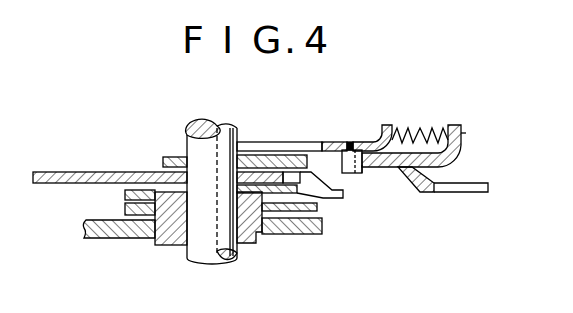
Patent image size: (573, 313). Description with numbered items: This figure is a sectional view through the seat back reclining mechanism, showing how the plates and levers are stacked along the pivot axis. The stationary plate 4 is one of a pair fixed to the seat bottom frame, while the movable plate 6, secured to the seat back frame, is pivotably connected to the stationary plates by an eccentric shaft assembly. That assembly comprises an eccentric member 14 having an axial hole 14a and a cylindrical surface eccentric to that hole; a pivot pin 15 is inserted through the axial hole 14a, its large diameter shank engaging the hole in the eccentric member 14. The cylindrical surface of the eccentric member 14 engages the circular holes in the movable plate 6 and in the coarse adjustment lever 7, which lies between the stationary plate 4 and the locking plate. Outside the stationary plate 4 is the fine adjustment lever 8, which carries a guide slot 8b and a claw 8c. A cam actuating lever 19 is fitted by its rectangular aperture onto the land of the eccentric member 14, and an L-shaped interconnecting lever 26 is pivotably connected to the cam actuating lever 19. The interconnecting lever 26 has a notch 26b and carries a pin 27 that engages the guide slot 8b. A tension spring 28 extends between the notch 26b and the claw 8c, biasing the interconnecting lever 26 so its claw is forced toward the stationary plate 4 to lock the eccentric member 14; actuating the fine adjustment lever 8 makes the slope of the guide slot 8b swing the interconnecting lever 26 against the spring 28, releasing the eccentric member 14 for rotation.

The stationary plate 4 is at (70, 172).
The movable plate 6 is at (108, 241).
The coarse adjustment lever 7 is at (127, 210).
The fine adjustment lever 8 is at (470, 192).
The guide slot 8b is at (347, 174).
The claw 8c is at (457, 126).
The eccentric member 14 is at (177, 243).
The axial hole 14a is at (228, 261).
The pivot pin 15 is at (209, 250).
The cam actuating lever 19 is at (338, 190).
The interconnecting lever 26 is at (303, 142).
The notch 26b is at (385, 125).
The pin 27 is at (362, 172).
The tension spring 28 is at (428, 128).